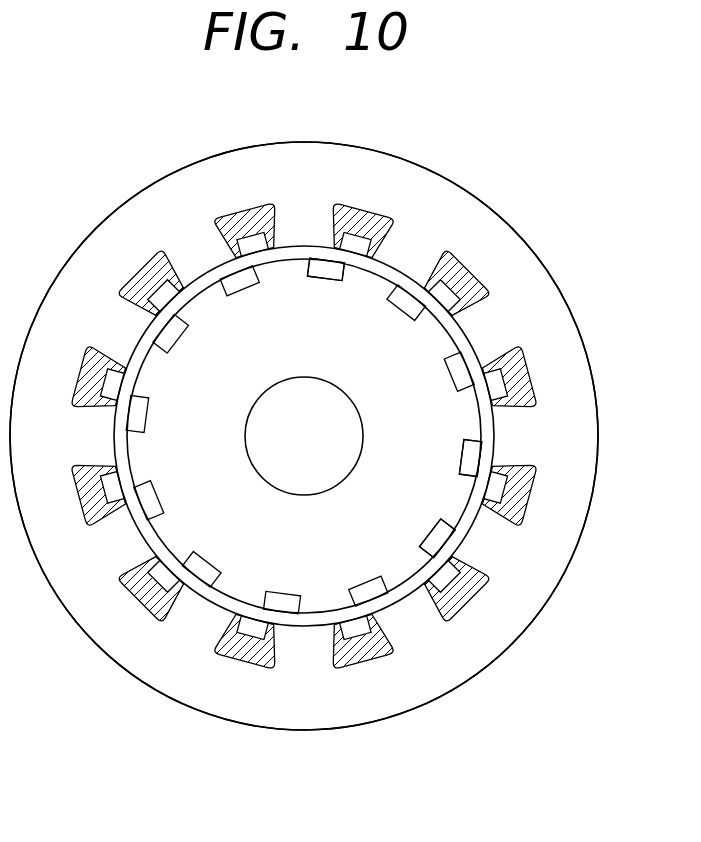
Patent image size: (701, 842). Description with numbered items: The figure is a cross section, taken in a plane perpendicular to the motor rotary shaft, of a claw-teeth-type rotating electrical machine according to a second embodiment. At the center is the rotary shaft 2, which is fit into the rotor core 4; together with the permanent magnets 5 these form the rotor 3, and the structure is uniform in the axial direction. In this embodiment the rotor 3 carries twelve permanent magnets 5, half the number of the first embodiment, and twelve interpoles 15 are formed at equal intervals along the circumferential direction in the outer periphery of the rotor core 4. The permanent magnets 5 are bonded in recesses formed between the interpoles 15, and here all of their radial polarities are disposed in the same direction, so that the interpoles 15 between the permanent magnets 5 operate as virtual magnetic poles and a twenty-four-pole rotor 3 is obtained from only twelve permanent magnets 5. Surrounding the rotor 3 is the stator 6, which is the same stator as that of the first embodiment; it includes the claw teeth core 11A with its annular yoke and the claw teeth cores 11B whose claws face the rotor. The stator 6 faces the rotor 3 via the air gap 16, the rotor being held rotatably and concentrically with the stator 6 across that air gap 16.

The rotary shaft 2 is at (302, 473).
The rotor 3 is at (463, 361).
The rotor core 4 is at (220, 320).
The permanent magnets 5 is at (324, 263).
The stator 6 is at (443, 693).
The claw teeth core 11A is at (427, 232).
The claw teeth cores 11B is at (360, 232).
The interpoles 15 is at (448, 502).
The air gap 16 is at (487, 440).